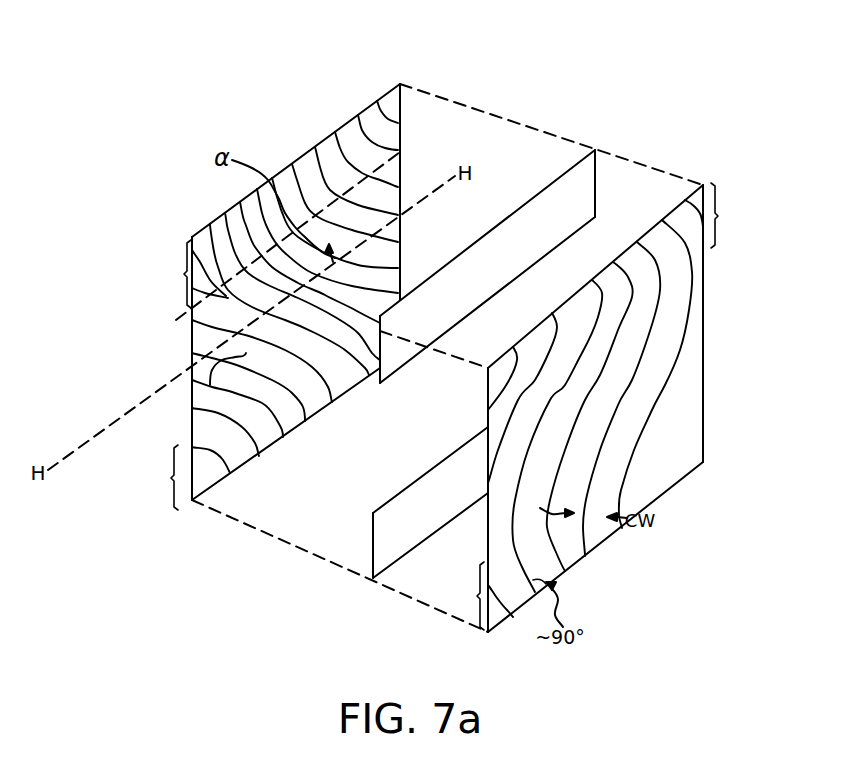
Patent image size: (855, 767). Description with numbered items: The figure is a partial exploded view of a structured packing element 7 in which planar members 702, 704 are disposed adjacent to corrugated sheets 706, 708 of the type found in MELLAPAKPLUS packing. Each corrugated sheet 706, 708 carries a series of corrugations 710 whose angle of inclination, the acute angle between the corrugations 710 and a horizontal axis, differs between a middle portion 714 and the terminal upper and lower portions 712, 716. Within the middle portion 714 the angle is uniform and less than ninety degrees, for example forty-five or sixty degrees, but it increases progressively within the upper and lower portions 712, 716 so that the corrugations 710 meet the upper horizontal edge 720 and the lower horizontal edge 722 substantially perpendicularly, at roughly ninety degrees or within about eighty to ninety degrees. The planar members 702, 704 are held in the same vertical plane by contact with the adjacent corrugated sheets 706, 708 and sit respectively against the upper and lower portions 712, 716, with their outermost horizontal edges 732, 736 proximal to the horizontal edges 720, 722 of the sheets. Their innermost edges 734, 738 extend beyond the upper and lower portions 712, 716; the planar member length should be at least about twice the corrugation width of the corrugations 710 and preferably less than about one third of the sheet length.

The structured packing element 7 is at (729, 561).
The planar member 702 is at (487, 234).
The planar member 704 is at (392, 511).
The corrugated sheet 706 is at (735, 303).
The corrugated sheet 708 is at (416, 74).
The corrugations 710 is at (318, 188).
The upper portion 712 is at (452, 245).
The middle portion 714 is at (192, 410).
The lower portion 716 is at (307, 537).
The upper horizontal edge 720 is at (360, 113).
The lower horizontal edge 722 is at (290, 428).
The outermost horizontal edge 732 is at (518, 207).
The innermost edge 734 is at (547, 254).
The outermost horizontal edge 736 is at (430, 537).
The innermost edge 738 is at (428, 472).